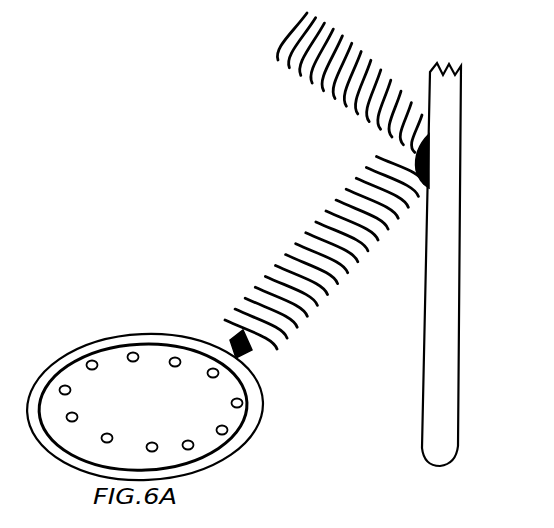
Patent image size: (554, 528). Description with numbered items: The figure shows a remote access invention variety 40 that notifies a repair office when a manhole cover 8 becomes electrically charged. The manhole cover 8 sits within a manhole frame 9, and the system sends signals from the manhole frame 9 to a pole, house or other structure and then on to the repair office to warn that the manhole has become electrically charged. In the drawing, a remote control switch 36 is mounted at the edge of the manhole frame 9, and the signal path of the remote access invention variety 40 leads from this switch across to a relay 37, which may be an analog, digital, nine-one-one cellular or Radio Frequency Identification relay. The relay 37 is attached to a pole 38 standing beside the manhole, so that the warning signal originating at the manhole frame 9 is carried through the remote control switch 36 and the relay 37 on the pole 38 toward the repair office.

The manhole cover 8 is at (76, 373).
The manhole frame 9 is at (111, 340).
The remote control switch 36 is at (252, 348).
The analog, digital, 911 cellular or Radio Frequency Identification (RFID) relay 37 is at (430, 156).
The pole 38 is at (443, 398).
The remote access invention variety 40 is at (305, 171).